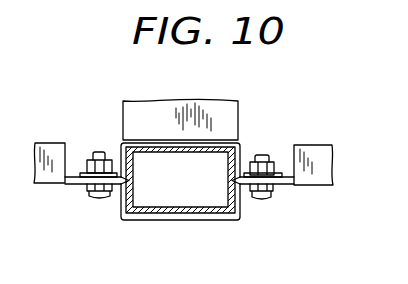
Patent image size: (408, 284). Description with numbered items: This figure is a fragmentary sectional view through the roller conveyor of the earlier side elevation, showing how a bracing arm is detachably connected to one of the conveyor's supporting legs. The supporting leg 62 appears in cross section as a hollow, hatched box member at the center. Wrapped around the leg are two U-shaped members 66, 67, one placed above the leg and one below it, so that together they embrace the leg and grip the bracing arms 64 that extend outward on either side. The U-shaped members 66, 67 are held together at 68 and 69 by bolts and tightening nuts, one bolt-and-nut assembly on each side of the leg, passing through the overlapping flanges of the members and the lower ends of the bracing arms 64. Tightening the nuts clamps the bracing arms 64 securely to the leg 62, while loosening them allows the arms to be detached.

The supporting leg 62 is at (170, 213).
The bracing arm 64 is at (42, 181).
The U-shaped member 66 is at (123, 141).
The U-shaped member 67 is at (241, 220).
The bolt and tightening nut connection 68 is at (90, 198).
The bolt and tightening nut connection 69 is at (269, 198).